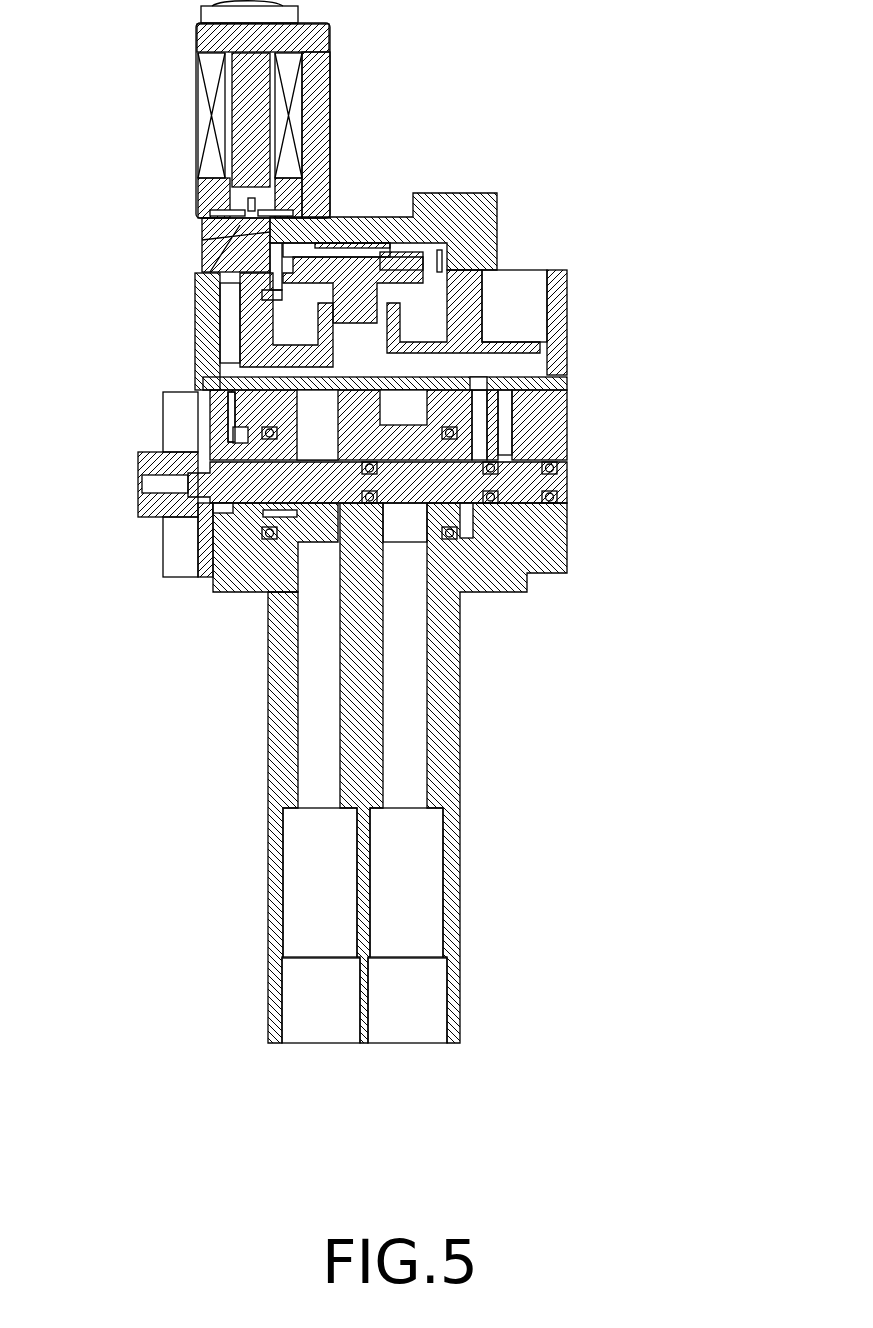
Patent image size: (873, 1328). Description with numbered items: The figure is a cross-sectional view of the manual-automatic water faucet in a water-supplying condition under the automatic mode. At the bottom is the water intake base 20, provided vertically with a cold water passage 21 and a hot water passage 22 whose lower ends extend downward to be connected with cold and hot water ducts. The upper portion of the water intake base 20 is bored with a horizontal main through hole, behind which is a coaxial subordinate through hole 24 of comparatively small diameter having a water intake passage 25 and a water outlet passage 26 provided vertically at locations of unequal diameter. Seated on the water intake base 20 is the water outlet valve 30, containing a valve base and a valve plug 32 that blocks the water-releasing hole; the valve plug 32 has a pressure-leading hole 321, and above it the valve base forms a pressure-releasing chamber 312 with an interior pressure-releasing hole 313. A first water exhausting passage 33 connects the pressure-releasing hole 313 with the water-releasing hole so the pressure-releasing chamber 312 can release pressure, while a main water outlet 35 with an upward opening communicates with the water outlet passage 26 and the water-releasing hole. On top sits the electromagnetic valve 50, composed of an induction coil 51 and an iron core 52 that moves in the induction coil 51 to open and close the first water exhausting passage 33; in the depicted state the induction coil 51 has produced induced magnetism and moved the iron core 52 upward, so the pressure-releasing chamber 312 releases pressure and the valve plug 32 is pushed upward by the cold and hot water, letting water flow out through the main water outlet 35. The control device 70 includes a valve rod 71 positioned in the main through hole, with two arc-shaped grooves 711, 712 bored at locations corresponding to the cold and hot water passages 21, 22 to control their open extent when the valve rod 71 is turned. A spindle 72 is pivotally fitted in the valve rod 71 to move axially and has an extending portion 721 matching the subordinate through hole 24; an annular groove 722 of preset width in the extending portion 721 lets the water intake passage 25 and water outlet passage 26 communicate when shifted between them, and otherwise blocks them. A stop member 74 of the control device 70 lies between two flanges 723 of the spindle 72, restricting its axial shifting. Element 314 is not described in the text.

The water intake base 20 is at (384, 712).
The cold water passage 21 is at (330, 668).
The hot water passage 22 is at (415, 728).
The subordinate through hole 24 is at (434, 430).
The water intake passage 25 is at (510, 400).
The water outlet passage 26 is at (477, 415).
The water outlet valve 30 is at (411, 283).
The valve plug 32 is at (437, 243).
The first water exhausting passage 33 is at (227, 328).
The main water outlet 35 is at (522, 277).
The pressure-releasing chamber 312 is at (385, 330).
The pressure-releasing hole 313 is at (277, 247).
The seal block 314 is at (277, 223).
The pressure-leading hole 321 is at (255, 295).
The electromagnetic valve 50 is at (317, 109).
The induction coil 51 is at (310, 88).
The iron core 52 is at (252, 157).
The control device 70 is at (341, 484).
The valve rod 71 is at (197, 530).
The spindle 72 is at (360, 498).
The stop member 74 is at (197, 557).
The arc-shaped groove 711 is at (310, 513).
The arc-shaped groove 712 is at (400, 528).
The extending portion 721 is at (528, 483).
The annular groove 722 is at (528, 502).
The flanges 723 is at (153, 450).